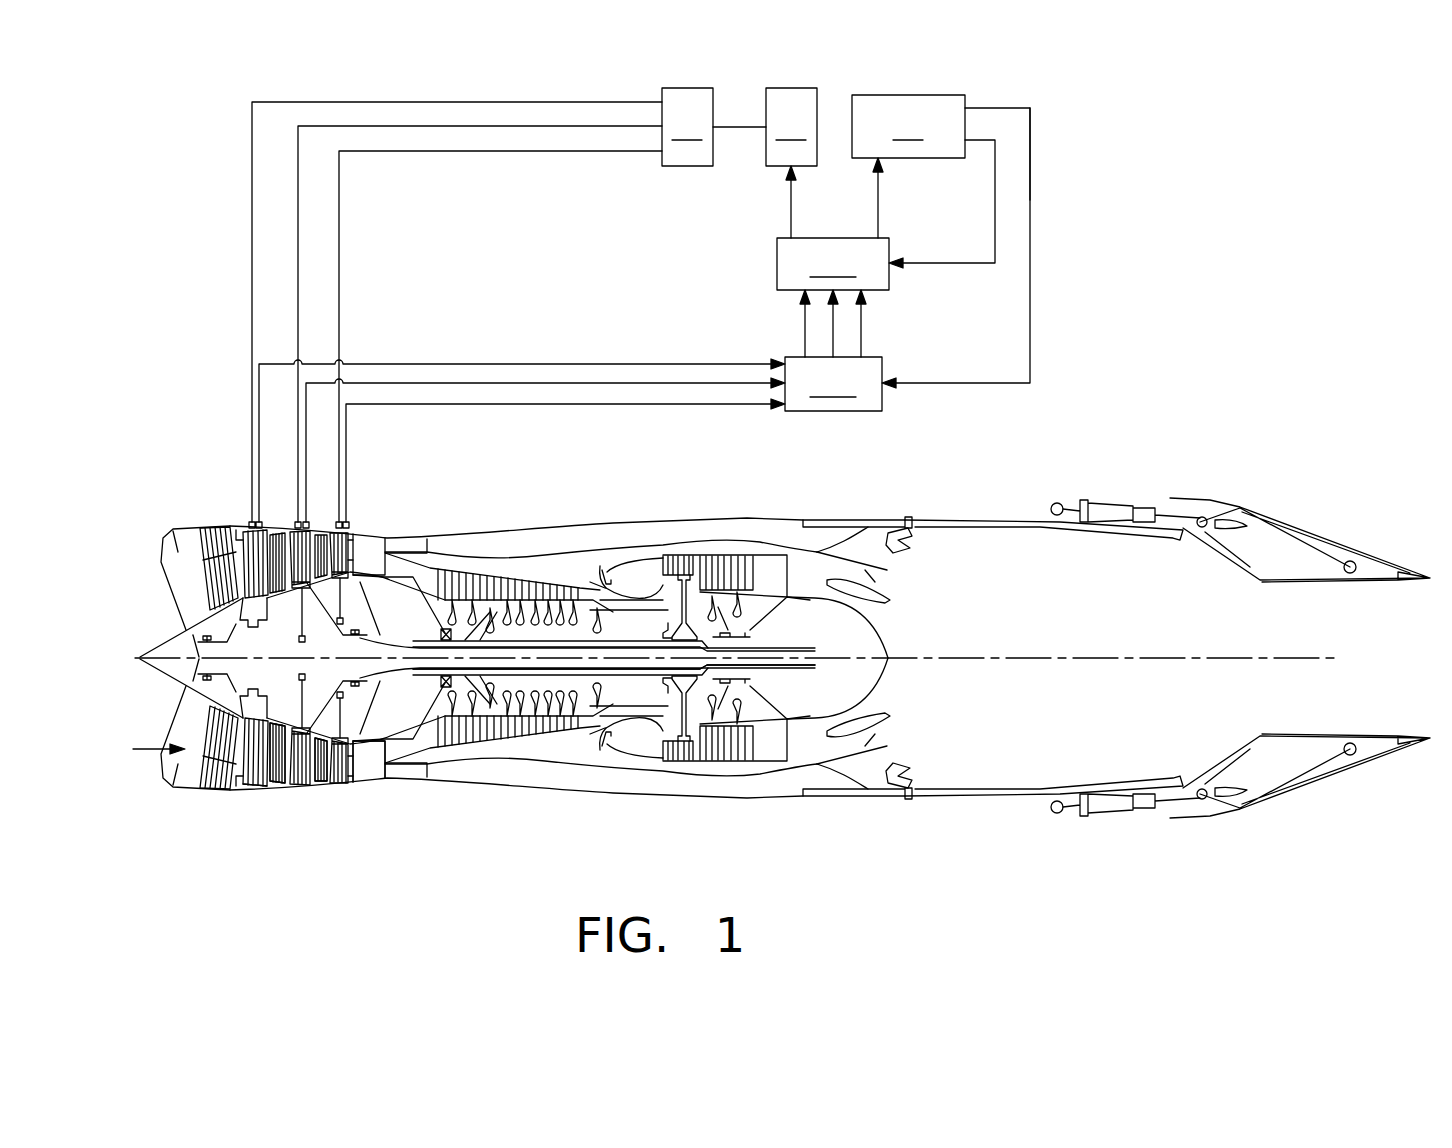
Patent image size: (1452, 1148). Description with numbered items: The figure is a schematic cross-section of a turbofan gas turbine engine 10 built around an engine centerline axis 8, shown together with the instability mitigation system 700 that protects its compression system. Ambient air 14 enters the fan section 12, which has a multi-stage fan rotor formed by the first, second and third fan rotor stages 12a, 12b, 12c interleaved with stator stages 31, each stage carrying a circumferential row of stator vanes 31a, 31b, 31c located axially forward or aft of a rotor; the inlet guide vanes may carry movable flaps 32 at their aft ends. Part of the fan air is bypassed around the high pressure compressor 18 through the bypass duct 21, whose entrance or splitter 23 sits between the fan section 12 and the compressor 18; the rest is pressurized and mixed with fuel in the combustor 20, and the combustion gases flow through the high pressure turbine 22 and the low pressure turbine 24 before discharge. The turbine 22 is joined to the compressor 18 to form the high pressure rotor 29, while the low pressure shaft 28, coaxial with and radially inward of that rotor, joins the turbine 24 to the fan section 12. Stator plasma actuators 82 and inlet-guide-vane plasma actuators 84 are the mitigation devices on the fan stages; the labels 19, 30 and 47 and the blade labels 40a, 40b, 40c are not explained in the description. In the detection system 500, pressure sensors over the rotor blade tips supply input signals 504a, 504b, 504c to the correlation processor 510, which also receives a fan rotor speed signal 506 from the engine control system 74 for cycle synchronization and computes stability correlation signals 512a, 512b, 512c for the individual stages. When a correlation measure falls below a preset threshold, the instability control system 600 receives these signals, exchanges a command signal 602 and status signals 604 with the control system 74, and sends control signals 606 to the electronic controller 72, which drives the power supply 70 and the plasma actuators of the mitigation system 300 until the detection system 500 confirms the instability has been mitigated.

The engine centerline axis 8 is at (178, 628).
The turbofan gas turbine engine 10 is at (505, 810).
The fan section 12 is at (277, 510).
The first fan rotor stage 12a is at (257, 620).
The second fan rotor stage 12b is at (302, 603).
The third fan rotor stage 12c is at (350, 553).
The ambient air 14 is at (145, 750).
The high pressure compressor 18 is at (495, 560).
The high pressure compressor 19 is at (523, 605).
The combustor 20 is at (617, 563).
The bypass duct 21 is at (545, 540).
The high pressure turbine 22 is at (682, 560).
The splitter 23 is at (387, 538).
The low pressure turbine 24 is at (723, 558).
The low pressure shaft 28 is at (652, 704).
The high pressure rotor 29 is at (652, 641).
The inlet 30 is at (178, 550).
The stator stages 31 is at (250, 545).
The stator vanes 31a is at (277, 772).
The stator vanes 31b is at (322, 772).
The stator vanes 31c is at (358, 772).
The movable flaps 32 is at (217, 532).
The sensor 40a is at (237, 537).
The sensor 40b is at (307, 535).
The sensor 40c is at (337, 540).
The vane 47 is at (257, 790).
The power supply 70 is at (687, 127).
The electronic controller 72 is at (791, 127).
The engine control system 74 is at (908, 126).
The stator plasma actuators 82 is at (276, 543).
The IGV plasma actuators 84 is at (217, 565).
The mitigation system 300 is at (405, 88).
The detection system 500 is at (1018, 410).
The input signal 504a is at (672, 364).
The input signal 504b is at (615, 383).
The input signal 504c is at (645, 404).
The fan rotor speed signal 506 is at (1030, 300).
The correlation processor 510 is at (833, 384).
The processed signal 512a is at (805, 335).
The processed signal 512b is at (833, 345).
The processed signal 512c is at (861, 330).
The instability control system 600 is at (833, 264).
The command signal 602 is at (995, 190).
The status signals 604 is at (880, 212).
The instability control system signals 606 is at (791, 215).
The instability mitigation system 700 is at (1105, 107).